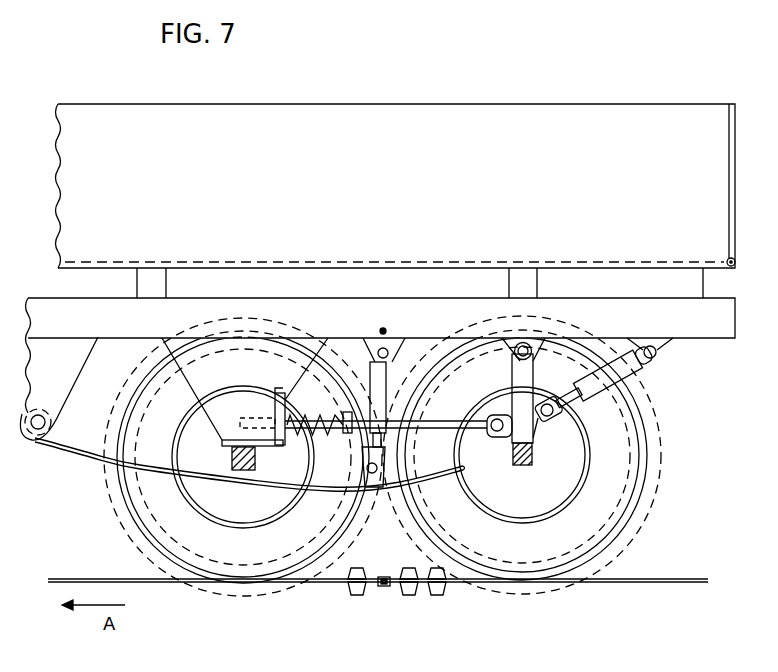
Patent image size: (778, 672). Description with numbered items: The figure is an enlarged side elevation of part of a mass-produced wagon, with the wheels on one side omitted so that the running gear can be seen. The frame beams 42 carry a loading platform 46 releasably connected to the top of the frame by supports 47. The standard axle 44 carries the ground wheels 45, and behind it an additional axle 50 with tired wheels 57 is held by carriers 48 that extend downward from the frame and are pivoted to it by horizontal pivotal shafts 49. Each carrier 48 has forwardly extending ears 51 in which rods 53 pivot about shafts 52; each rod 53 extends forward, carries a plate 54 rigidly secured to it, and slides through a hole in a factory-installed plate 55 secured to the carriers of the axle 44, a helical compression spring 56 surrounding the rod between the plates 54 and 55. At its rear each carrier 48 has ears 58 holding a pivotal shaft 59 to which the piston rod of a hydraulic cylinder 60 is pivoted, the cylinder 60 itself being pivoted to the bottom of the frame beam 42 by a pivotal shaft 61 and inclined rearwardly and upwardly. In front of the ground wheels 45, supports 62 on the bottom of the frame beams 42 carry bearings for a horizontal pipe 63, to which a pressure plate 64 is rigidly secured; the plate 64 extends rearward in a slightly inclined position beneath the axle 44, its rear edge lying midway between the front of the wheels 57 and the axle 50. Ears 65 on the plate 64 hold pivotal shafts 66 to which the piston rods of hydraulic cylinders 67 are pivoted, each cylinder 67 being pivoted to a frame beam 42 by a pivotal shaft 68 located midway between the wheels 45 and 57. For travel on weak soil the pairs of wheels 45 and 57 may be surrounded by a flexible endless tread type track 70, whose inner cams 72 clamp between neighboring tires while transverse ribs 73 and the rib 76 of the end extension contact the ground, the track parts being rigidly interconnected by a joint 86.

The frame beams 42 is at (695, 337).
The axle 44 is at (236, 471).
The ground wheels 45 is at (290, 585).
The loading platform 46 is at (440, 101).
The supports 47 is at (140, 286).
The carriers 48 is at (512, 365).
The pivotal shafts 49 is at (540, 336).
The additional axle 50 is at (528, 482).
The ears 51 is at (520, 464).
The shafts 52 is at (502, 437).
The rods 53 is at (443, 419).
The plates 54 is at (350, 410).
The plates 55 is at (288, 392).
The helical compression spring 56 is at (320, 414).
The tired wheels 57 is at (433, 540).
The ears 58 is at (538, 443).
The pivotal shaft 59 is at (555, 420).
The hydraulic cylinder 60 is at (593, 396).
The pivotal shafts 61 is at (655, 358).
The supports 62 is at (76, 372).
The pipe 63 is at (52, 420).
The pressure plate 64 is at (82, 464).
The ears 65 is at (371, 490).
The pivotal shafts 66 is at (367, 472).
The hydraulic cylinders 67 is at (388, 384).
The pivotal shaft 68 is at (392, 354).
The endless tread type track 70 is at (442, 596).
The cams 72 is at (357, 568).
The transverse ribs 73 is at (353, 596).
The transverse rib 76 is at (387, 596).
The joint 86 is at (383, 328).